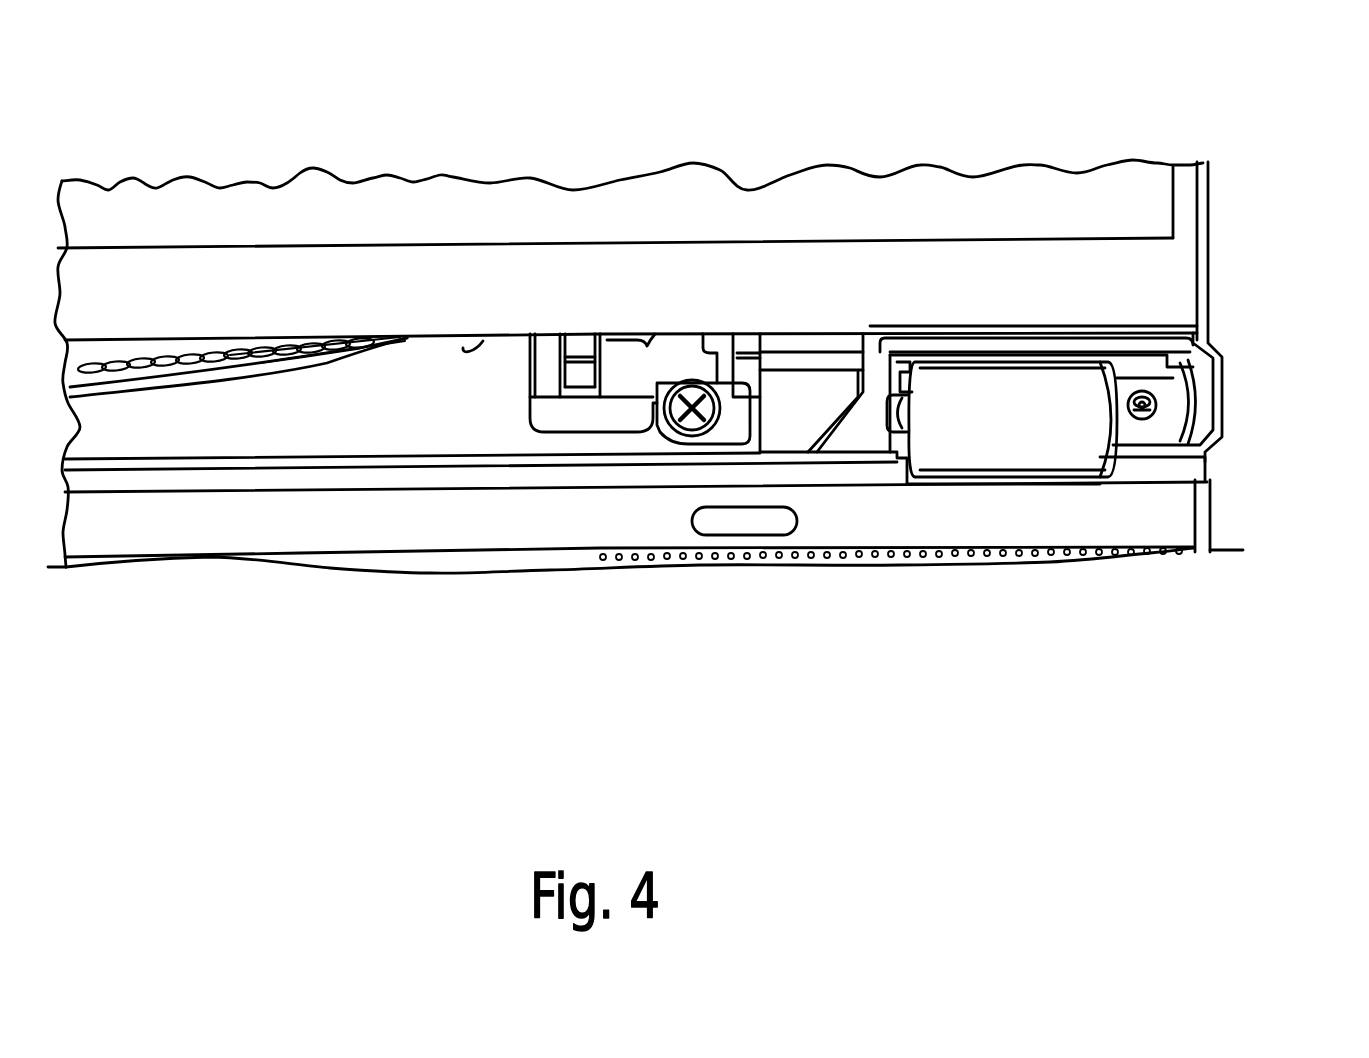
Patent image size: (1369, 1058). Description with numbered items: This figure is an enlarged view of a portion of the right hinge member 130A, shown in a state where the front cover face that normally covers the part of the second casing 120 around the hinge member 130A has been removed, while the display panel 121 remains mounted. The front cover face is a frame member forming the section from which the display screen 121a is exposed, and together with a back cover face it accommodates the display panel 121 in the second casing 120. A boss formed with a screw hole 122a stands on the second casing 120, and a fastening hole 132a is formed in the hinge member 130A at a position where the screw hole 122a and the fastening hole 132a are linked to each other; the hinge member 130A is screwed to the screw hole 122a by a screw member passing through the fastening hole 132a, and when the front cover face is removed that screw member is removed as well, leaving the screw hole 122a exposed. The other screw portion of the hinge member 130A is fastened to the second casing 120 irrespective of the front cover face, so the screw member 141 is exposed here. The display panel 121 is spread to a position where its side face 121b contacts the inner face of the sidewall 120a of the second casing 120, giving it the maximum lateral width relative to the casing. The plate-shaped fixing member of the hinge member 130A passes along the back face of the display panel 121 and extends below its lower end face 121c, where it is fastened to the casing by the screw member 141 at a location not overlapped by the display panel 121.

The second casing 120 is at (1210, 183).
The sidewall 120a is at (1200, 212).
The display panel 121 is at (700, 298).
The display screen 121a is at (1117, 175).
The side face 121b is at (1198, 277).
The lower end face 121c is at (463, 348).
The hinge member 130A is at (1077, 397).
The screw member 141 is at (688, 380).
The screw hole 122a is at (1155, 403).
The fastening hole 132a is at (1142, 412).